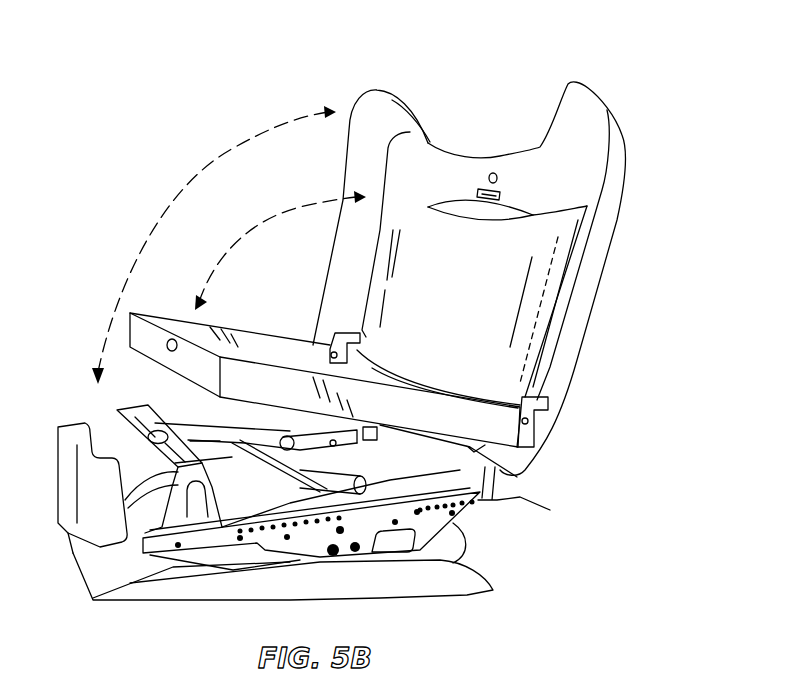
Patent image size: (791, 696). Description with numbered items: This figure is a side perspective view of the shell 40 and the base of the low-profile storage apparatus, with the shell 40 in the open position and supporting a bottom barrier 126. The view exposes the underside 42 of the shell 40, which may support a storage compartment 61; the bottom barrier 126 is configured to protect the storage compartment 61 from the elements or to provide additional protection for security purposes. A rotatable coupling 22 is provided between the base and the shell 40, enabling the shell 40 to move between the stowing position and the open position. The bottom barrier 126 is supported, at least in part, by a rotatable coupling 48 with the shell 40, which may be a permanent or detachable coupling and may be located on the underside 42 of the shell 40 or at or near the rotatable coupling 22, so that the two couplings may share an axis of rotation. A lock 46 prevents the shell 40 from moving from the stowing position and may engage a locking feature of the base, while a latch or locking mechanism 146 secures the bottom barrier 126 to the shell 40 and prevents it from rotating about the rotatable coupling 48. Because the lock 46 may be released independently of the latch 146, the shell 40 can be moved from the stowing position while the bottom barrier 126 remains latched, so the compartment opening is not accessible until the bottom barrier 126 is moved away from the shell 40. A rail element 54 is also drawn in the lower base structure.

The rotatable coupling 22 is at (373, 428).
The shell 40 is at (617, 152).
The underside 42 is at (353, 253).
The lock 46 is at (492, 172).
The rotatable coupling 48 is at (328, 340).
The seat rail 54 is at (365, 433).
The storage compartment 61 is at (547, 268).
The bottom barrier 126 is at (240, 330).
The latch or locking mechanism 146 is at (478, 190).